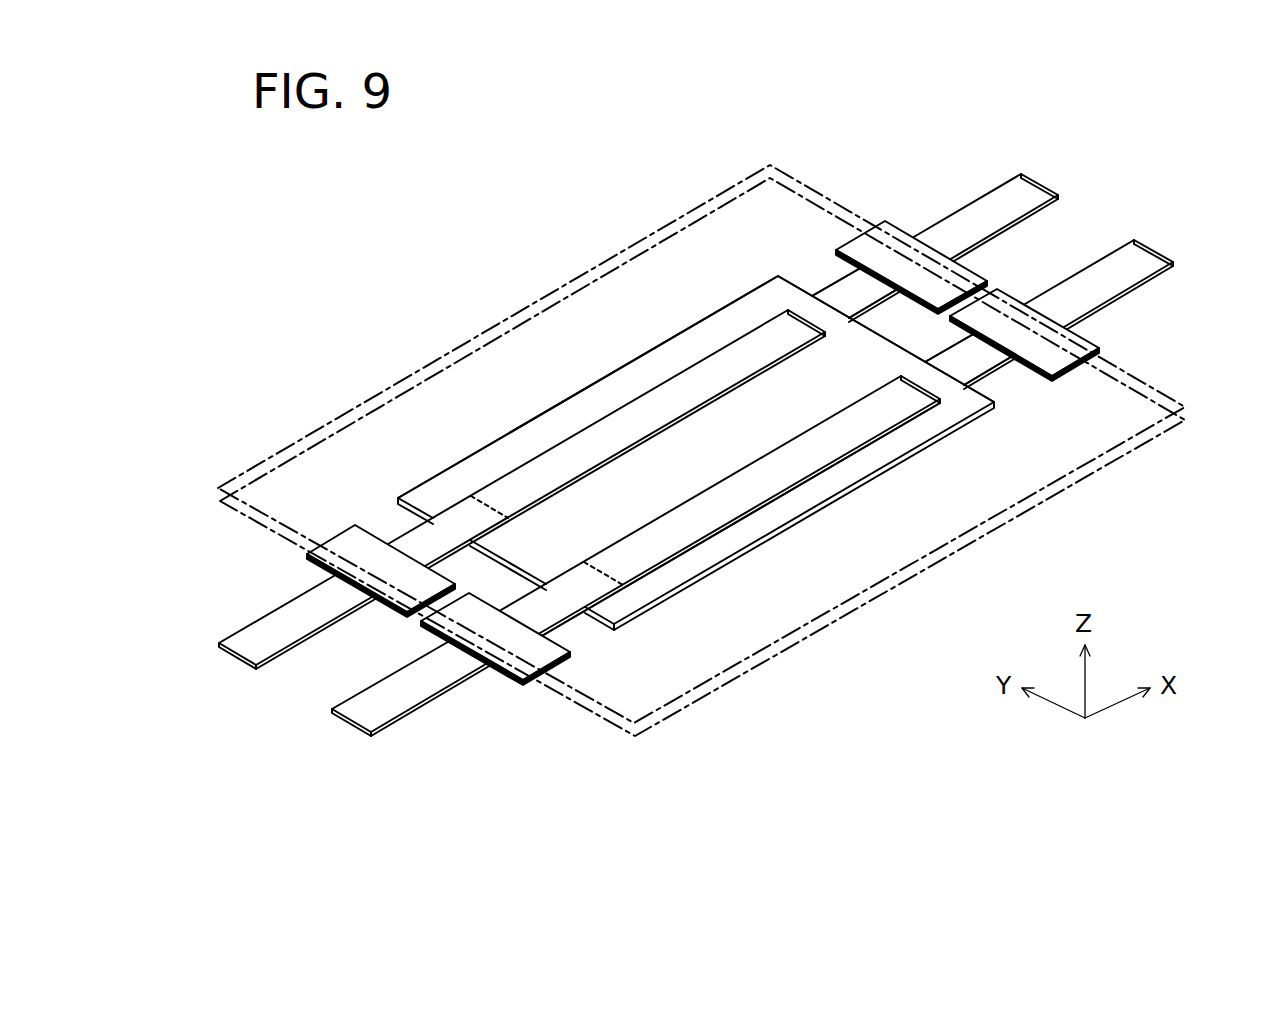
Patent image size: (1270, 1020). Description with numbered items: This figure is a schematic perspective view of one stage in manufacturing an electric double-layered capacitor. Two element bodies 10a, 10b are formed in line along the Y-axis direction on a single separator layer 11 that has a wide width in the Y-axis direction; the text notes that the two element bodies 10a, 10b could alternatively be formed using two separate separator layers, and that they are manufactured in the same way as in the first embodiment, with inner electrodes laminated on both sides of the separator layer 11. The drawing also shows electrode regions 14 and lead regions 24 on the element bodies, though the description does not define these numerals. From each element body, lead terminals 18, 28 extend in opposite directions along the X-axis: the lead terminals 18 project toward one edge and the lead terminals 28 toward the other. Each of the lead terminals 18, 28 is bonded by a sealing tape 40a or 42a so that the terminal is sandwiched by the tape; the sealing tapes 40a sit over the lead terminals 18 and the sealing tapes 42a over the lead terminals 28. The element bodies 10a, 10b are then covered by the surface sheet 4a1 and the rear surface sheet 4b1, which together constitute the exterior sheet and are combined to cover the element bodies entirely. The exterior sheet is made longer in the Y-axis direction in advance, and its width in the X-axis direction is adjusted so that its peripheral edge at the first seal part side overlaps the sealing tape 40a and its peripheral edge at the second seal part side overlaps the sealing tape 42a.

The surface sheet 4a1 is at (580, 276).
The rear surface sheet 4b1 is at (648, 235).
The element body 10a is at (790, 502).
The element body 10b is at (628, 388).
The separator layer 11 is at (568, 417).
The electrode strip 14 is at (515, 485).
The lead terminal 18 is at (288, 636).
The exposed lead portion 24 is at (863, 288).
The lead terminal 28 is at (985, 195).
The sealing tape 40a is at (340, 540).
The sealing tape 42a is at (875, 262).